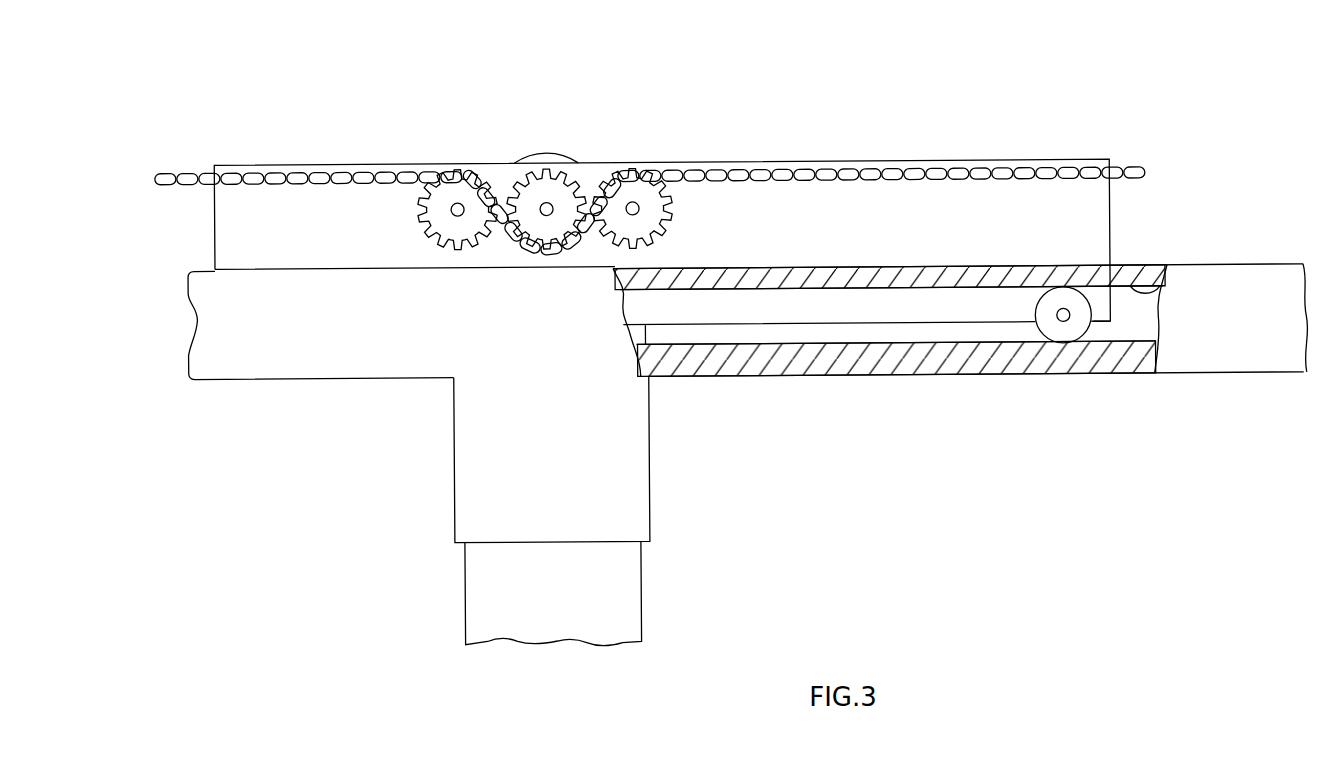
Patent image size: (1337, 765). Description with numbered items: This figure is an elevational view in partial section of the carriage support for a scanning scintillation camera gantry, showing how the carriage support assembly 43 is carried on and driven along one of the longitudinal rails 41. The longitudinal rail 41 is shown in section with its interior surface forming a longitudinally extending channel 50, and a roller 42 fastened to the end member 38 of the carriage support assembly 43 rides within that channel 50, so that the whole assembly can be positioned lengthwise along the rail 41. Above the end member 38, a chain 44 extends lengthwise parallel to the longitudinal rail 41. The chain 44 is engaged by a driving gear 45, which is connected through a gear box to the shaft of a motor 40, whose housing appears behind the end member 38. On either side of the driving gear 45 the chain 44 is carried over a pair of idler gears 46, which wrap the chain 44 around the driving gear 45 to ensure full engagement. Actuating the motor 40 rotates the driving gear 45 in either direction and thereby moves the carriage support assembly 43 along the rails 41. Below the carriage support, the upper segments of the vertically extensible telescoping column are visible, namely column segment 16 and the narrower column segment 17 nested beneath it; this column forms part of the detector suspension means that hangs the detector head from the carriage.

The column segment 16 is at (552, 459).
The column segment 17 is at (553, 593).
The end member 38 is at (662, 243).
The motor 40 is at (540, 152).
The longitudinal rail 41 is at (1207, 345).
The roller 42 is at (1073, 306).
The carriage support assembly 43 is at (801, 128).
The chain 44 is at (1037, 172).
The driving gear 45 is at (553, 190).
The idler gear 46 is at (440, 193).
The channel 50 is at (1163, 291).